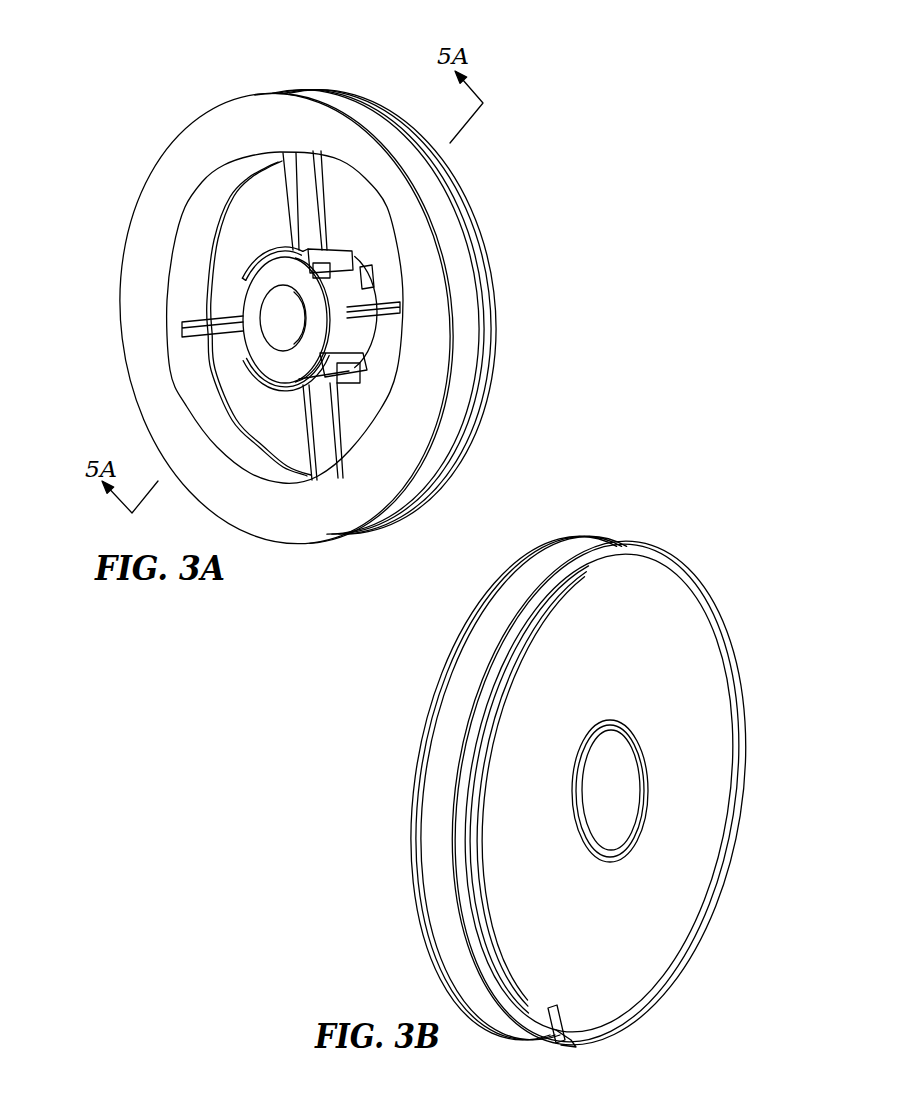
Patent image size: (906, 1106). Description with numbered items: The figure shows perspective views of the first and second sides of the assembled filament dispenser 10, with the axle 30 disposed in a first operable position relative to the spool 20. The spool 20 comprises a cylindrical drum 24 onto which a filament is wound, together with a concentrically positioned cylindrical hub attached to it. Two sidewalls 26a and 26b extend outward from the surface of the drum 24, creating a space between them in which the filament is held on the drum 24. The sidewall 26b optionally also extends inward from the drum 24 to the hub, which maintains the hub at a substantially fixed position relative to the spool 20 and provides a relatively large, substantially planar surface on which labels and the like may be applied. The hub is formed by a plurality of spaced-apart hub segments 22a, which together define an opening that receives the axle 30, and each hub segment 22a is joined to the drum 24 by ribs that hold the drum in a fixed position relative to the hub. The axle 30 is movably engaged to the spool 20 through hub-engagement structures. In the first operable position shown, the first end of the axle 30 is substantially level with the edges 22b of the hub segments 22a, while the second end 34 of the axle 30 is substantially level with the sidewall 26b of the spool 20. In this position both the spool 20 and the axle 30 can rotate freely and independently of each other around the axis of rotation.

In FIG. 3A, the filament dispenser 10 is at (162, 73).
In FIG. 3B, the filament dispenser 10 is at (403, 658).
In FIG. 3A, the spool 20 is at (156, 159).
In FIG. 3B, the spool 20 is at (417, 737).
In FIG. 3A, the hub segments 22a is at (110, 378).
In FIG. 3A, the edges of the hub segments 22b is at (303, 247).
In FIG. 3B, the cylindrical drum 24 is at (465, 777).
In FIG. 3A, the sidewall 26a is at (333, 137).
In FIG. 3B, the sidewall 26a is at (435, 853).
In FIG. 3A, the sidewall 26b is at (438, 202).
In FIG. 3B, the sidewall 26b is at (680, 612).
In FIG. 3A, the axle 30 is at (243, 303).
In FIG. 3B, the axle 30 is at (648, 812).
In FIG. 3B, the second end of the axle 34 is at (632, 743).